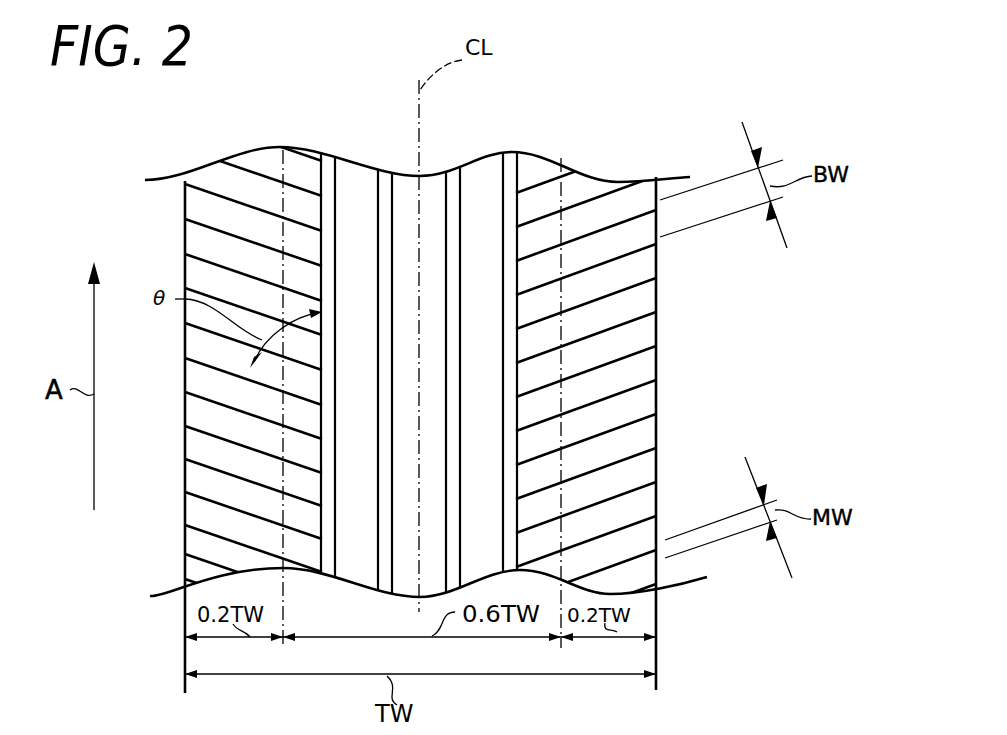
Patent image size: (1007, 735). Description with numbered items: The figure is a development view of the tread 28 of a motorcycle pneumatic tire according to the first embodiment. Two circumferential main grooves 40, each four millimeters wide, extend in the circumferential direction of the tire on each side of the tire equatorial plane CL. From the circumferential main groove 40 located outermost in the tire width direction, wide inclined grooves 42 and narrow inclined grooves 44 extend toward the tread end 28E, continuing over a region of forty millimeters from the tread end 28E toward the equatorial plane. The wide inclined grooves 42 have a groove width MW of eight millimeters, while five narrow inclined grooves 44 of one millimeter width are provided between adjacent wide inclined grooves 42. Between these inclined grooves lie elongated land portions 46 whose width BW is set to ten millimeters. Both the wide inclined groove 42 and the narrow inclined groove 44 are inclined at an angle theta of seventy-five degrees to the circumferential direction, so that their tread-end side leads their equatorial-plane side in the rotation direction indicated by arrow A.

The tread 28 is at (541, 150).
The tread end 28E is at (185, 512).
The circumferential main groove 40 is at (325, 170).
The wide inclined groove 42 is at (228, 166).
The narrow inclined groove 44 is at (200, 255).
The elongated land portion 46 is at (197, 413).